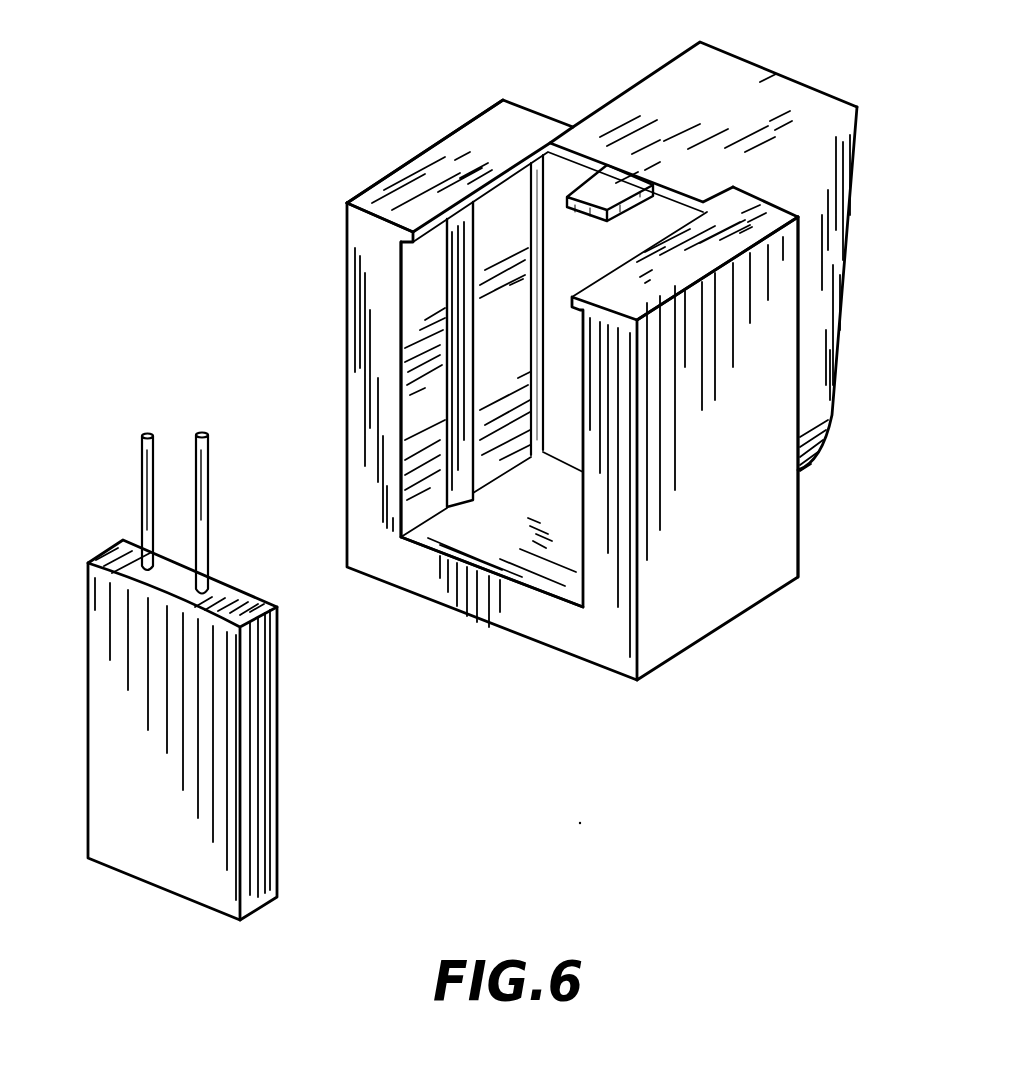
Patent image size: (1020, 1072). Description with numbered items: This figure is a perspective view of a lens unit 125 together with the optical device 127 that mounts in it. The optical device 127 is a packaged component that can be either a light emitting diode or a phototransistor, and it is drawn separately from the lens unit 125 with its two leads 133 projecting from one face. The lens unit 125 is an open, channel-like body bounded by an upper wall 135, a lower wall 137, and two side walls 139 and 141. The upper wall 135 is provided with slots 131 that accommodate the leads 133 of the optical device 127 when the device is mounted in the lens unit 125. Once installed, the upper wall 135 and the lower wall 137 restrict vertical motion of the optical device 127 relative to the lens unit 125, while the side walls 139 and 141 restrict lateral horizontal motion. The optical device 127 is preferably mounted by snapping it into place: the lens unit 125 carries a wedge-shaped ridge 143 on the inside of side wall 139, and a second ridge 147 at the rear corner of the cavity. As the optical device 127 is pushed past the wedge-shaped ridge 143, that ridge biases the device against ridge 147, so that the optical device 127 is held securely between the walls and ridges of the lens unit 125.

The lens unit 125 is at (717, 633).
The optical device 127 is at (277, 855).
The slots 131 is at (655, 215).
The leads 133 is at (213, 458).
The upper wall 135 is at (420, 172).
The lower wall 137 is at (532, 575).
The side wall 139 is at (415, 396).
The side wall 141 is at (750, 522).
The wedge-shaped ridge 143 is at (477, 378).
The ridge 147 is at (527, 158).